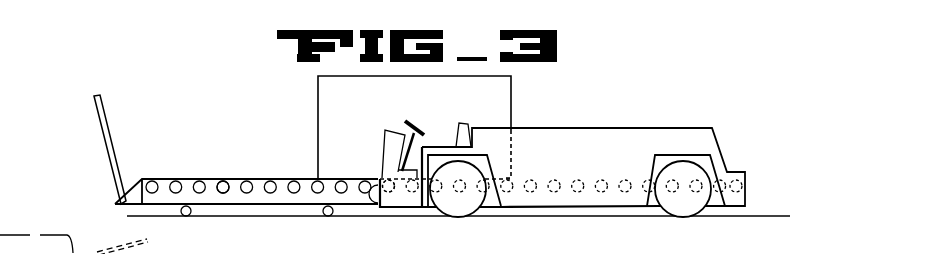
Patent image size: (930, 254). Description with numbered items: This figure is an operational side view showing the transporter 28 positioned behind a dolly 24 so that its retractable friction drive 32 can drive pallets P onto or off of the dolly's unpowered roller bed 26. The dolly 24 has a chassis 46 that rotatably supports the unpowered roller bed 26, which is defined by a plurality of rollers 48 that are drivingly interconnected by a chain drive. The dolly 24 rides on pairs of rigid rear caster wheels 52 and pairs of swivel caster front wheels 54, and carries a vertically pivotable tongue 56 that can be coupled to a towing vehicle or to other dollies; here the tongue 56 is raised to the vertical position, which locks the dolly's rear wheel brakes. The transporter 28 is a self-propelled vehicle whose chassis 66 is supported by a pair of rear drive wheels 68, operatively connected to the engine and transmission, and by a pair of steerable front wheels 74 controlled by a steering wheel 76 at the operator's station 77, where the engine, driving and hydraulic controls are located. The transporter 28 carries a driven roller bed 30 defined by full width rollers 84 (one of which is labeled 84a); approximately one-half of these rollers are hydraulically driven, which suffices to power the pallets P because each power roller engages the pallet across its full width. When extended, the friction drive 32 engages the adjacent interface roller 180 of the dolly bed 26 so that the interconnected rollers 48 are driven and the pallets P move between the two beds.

The pallets P is at (327, 99).
The dolly 24 is at (235, 160).
The unpowered roller bed 26 is at (217, 178).
The transporter 28 is at (561, 154).
The driven roller bed 30 is at (563, 162).
The retractable friction drive 32 is at (370, 212).
The chassis 46 is at (257, 195).
The rollers 48 is at (198, 180).
The rigid rear caster wheels 52 is at (325, 216).
The swivel caster front wheels 54 is at (187, 217).
The tongue 56 is at (106, 117).
The chassis 66 is at (621, 210).
The rear drive wheels 68 is at (690, 208).
The steerable front wheels 74 is at (463, 212).
The steering wheel 76 is at (412, 122).
The operator's station 77 is at (441, 120).
The full width rollers 84 is at (552, 176).
The front conveyor roller 84a is at (397, 200).
The interface roller 180 is at (364, 178).